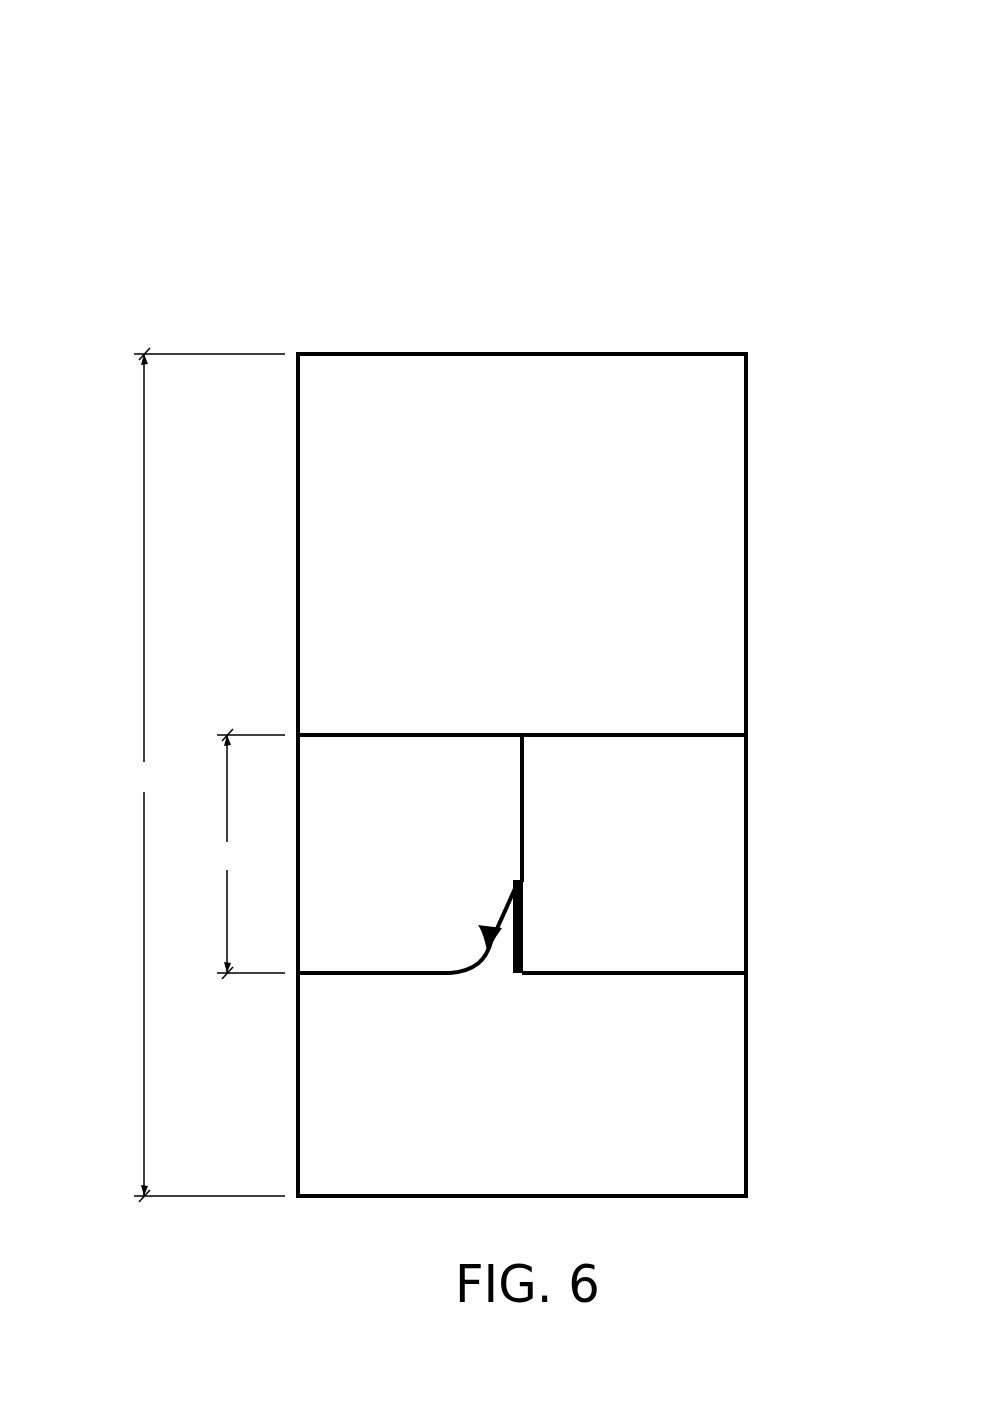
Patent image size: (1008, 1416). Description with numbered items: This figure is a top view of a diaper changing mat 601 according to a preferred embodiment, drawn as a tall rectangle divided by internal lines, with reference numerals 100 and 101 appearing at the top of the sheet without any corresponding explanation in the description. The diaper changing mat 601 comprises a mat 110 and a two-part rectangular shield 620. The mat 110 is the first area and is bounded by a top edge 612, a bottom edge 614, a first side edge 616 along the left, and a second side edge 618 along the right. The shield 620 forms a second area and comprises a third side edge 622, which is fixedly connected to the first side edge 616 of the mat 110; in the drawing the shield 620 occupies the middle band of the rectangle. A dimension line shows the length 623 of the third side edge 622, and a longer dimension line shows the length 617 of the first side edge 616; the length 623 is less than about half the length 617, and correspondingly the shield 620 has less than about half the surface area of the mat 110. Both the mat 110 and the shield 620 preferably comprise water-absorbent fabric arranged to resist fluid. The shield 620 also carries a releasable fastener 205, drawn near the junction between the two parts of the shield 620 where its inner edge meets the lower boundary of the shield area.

The imaging system 100 is at (161, 76).
The optical element 101 is at (164, 146).
The diaper changing mat 601 is at (166, 216).
The mat 110 is at (543, 370).
The top edge 612 is at (684, 354).
The bottom edge 614 is at (702, 1197).
The first side edge 616 is at (300, 1092).
The second side edge 618 is at (748, 1118).
The shield 620 is at (712, 708).
The third side edge 622 is at (300, 825).
The length of third side edge 623 is at (245, 854).
The length of first side edge 617 is at (203, 775).
The releasable fastener 205 is at (519, 975).